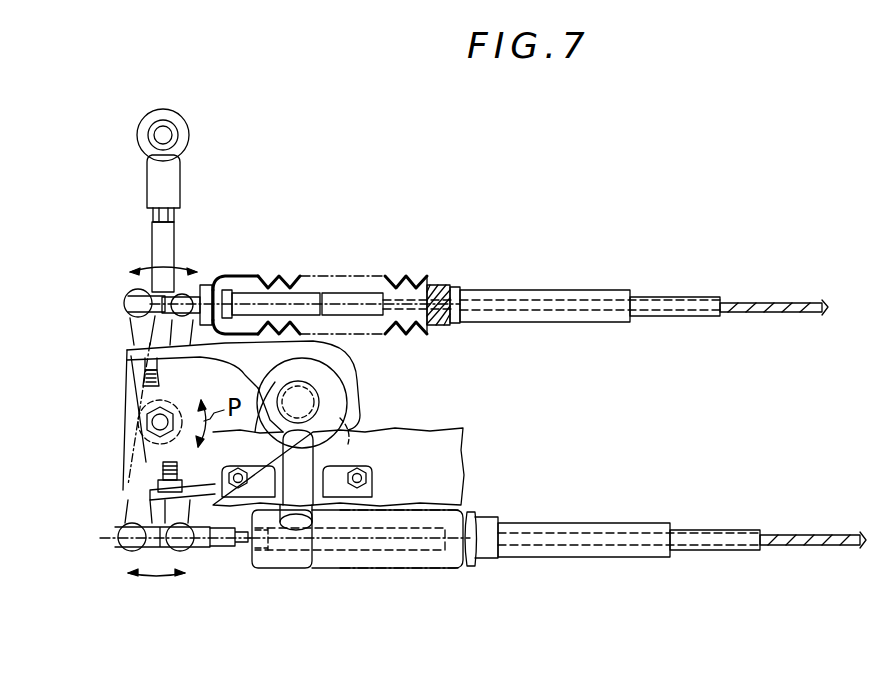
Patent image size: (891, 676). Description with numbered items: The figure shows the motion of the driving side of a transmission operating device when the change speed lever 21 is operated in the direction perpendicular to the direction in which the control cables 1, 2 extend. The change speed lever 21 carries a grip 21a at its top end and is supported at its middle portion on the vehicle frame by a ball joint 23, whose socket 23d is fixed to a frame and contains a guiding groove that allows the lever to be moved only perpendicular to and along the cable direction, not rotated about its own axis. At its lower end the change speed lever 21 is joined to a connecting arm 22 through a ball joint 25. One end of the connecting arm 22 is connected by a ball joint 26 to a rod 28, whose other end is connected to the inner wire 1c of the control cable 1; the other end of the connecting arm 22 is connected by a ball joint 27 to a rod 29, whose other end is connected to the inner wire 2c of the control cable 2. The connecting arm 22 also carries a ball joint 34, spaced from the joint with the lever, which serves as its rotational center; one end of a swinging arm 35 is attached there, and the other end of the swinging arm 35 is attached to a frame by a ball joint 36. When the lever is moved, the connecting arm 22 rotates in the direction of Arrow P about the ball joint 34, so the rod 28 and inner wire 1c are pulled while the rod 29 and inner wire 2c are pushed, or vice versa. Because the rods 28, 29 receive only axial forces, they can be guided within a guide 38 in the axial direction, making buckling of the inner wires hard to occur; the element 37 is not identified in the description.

The control cable 1 is at (686, 288).
The inner wire 1c is at (780, 300).
The control cable 2 is at (707, 523).
The inner wire 2c is at (806, 535).
The change speed lever 21 is at (307, 460).
The grip 21a is at (296, 530).
The connecting arm 22 is at (345, 397).
The ball joint 23 is at (338, 448).
The socket 23d is at (330, 422).
The ball joint 25 is at (330, 378).
The ball joint 26 is at (128, 302).
The ball joint 27 is at (198, 538).
The rod 28 is at (302, 293).
The rod 29 is at (410, 540).
The ball joint 34 is at (150, 425).
The swinging arm 35 is at (170, 252).
The ball joint 36 is at (148, 135).
The lower boot 37 is at (344, 560).
The guide 38 is at (357, 293).